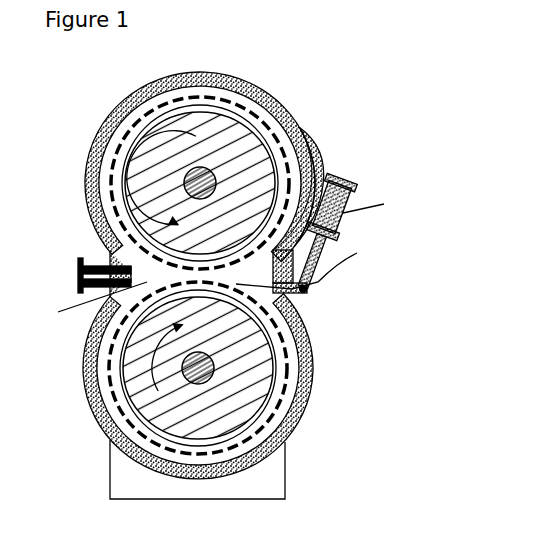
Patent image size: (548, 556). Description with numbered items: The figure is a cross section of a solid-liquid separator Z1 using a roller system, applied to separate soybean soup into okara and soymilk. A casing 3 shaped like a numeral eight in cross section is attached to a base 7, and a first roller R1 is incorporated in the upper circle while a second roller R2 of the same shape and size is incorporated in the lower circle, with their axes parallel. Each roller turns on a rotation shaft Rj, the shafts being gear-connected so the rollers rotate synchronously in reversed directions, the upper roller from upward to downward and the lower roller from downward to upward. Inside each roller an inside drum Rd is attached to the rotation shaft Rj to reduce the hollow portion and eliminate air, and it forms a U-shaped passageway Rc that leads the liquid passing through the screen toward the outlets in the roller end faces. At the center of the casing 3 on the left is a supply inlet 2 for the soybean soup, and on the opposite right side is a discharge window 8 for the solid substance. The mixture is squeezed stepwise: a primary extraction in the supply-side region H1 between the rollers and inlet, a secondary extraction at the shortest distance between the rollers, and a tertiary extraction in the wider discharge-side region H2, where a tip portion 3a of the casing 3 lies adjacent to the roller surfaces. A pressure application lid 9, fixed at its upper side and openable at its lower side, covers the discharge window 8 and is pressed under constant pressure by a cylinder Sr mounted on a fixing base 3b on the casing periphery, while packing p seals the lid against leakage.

The solid-liquid separator Z1 is at (310, 75).
The first roller R1 is at (220, 132).
The second roller R2 is at (114, 439).
The inside drum Rd is at (142, 145).
The passageway Rc is at (122, 180).
The rotation shaft Rj is at (212, 172).
The casing 3 is at (208, 275).
The tip portion 3a is at (304, 160).
The fixing base 3b is at (321, 187).
The cylinder Sr is at (346, 181).
The region on the supply side H1 is at (97, 329).
The region on the discharge side H2 is at (378, 203).
The supply inlet 2 is at (78, 270).
The base 7 is at (287, 484).
The discharge window 8 is at (290, 290).
The pressure application lid 9 is at (285, 272).
The packing p is at (304, 267).